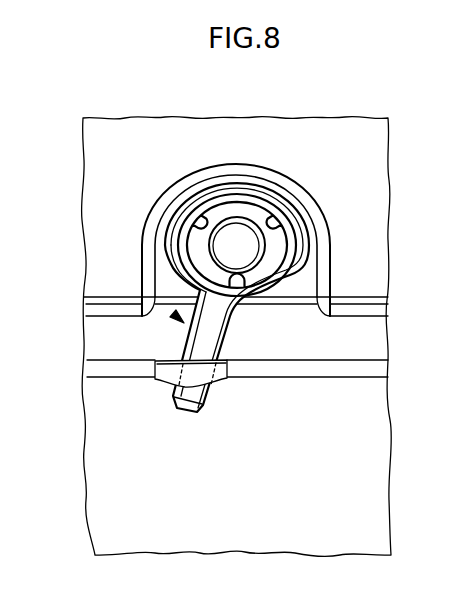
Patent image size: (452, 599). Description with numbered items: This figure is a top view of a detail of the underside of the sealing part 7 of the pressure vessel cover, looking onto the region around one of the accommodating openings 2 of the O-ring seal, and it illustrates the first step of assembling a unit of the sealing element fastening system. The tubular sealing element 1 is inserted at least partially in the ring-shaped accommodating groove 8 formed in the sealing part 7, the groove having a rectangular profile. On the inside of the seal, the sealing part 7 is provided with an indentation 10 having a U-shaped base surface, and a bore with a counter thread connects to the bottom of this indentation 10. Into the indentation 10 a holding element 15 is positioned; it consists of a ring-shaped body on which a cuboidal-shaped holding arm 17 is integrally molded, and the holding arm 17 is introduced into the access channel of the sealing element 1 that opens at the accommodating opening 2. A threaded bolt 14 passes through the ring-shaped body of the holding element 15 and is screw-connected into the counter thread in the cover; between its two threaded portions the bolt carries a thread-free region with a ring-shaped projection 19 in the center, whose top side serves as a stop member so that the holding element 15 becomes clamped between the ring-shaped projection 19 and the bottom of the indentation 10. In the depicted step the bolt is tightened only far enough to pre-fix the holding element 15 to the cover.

The sealing element 1 is at (118, 456).
The accommodating opening 2 is at (155, 371).
The sealing part 7 is at (362, 200).
The accommodating groove 8 is at (362, 336).
The indentation 10 is at (300, 271).
The threaded bolt 14 is at (232, 212).
The holding element 15 is at (172, 314).
The holding arm 17 is at (205, 344).
The ring-shaped projection 19 is at (193, 238).